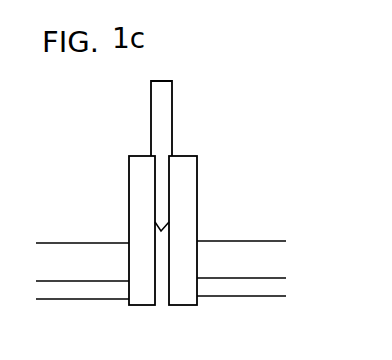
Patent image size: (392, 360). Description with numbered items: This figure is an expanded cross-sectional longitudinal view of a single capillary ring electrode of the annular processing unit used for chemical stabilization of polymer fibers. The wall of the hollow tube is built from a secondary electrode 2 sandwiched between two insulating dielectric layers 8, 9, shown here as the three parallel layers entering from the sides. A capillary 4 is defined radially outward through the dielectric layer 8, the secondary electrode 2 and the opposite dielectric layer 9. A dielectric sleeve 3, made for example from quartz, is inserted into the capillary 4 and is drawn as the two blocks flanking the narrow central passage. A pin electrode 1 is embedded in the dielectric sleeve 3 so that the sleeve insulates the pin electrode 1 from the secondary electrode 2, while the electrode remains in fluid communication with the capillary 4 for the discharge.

The pin electrode 1 is at (150, 120).
The secondary electrode 2 is at (272, 277).
The dielectric sleeve 3 is at (198, 207).
The capillary 4 is at (163, 297).
The dielectric layer 8 is at (271, 287).
The dielectric layer 9 is at (60, 266).